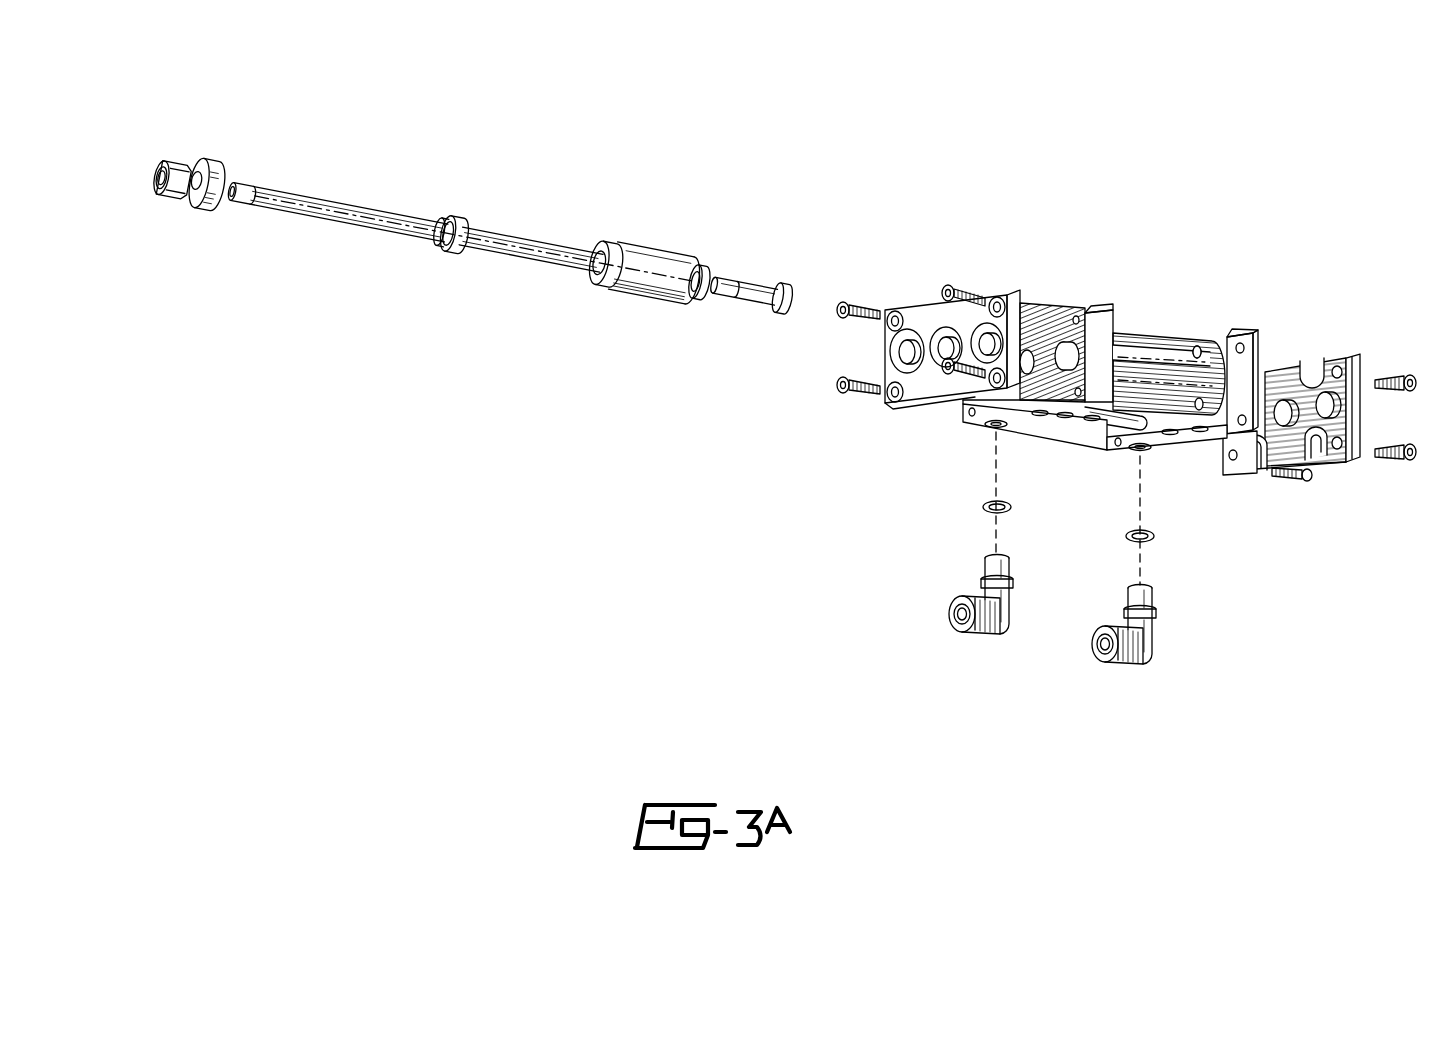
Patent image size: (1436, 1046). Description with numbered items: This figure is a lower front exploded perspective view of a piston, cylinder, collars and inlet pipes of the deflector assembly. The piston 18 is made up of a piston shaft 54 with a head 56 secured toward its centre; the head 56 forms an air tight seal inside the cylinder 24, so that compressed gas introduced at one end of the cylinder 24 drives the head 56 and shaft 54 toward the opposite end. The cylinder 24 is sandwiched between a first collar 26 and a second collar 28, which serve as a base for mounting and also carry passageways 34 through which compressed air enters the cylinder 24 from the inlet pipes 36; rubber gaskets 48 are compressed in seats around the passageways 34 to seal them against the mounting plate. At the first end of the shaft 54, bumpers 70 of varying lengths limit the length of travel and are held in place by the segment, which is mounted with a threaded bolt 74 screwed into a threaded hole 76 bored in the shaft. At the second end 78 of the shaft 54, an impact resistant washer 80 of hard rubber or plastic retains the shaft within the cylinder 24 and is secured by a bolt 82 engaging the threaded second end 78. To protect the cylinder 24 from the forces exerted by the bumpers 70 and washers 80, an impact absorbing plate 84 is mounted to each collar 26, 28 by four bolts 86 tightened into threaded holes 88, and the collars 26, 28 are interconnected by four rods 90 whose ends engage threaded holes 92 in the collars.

The piston 18 is at (338, 207).
The cylinder 24 is at (1168, 362).
The first collar 26 is at (1098, 306).
The second collar 28 is at (1228, 329).
The passageway 34 is at (985, 427).
The inlet pipe 36 is at (1007, 636).
The rubber gasket 48 is at (1011, 508).
The piston shaft 54 is at (492, 265).
The head 56 is at (470, 219).
The bumper 70 is at (636, 311).
The threaded bolt 74 is at (748, 314).
The threaded hole 76 is at (596, 251).
The second end 78 is at (256, 184).
The impact resistant washer 80 is at (218, 212).
The bolt 82 is at (185, 168).
The impact absorbing plate 84 is at (930, 305).
The bolt 86 is at (985, 299).
The threaded hole 88 is at (1062, 344).
The rod 90 is at (1118, 397).
The threaded hole 92 is at (1198, 345).